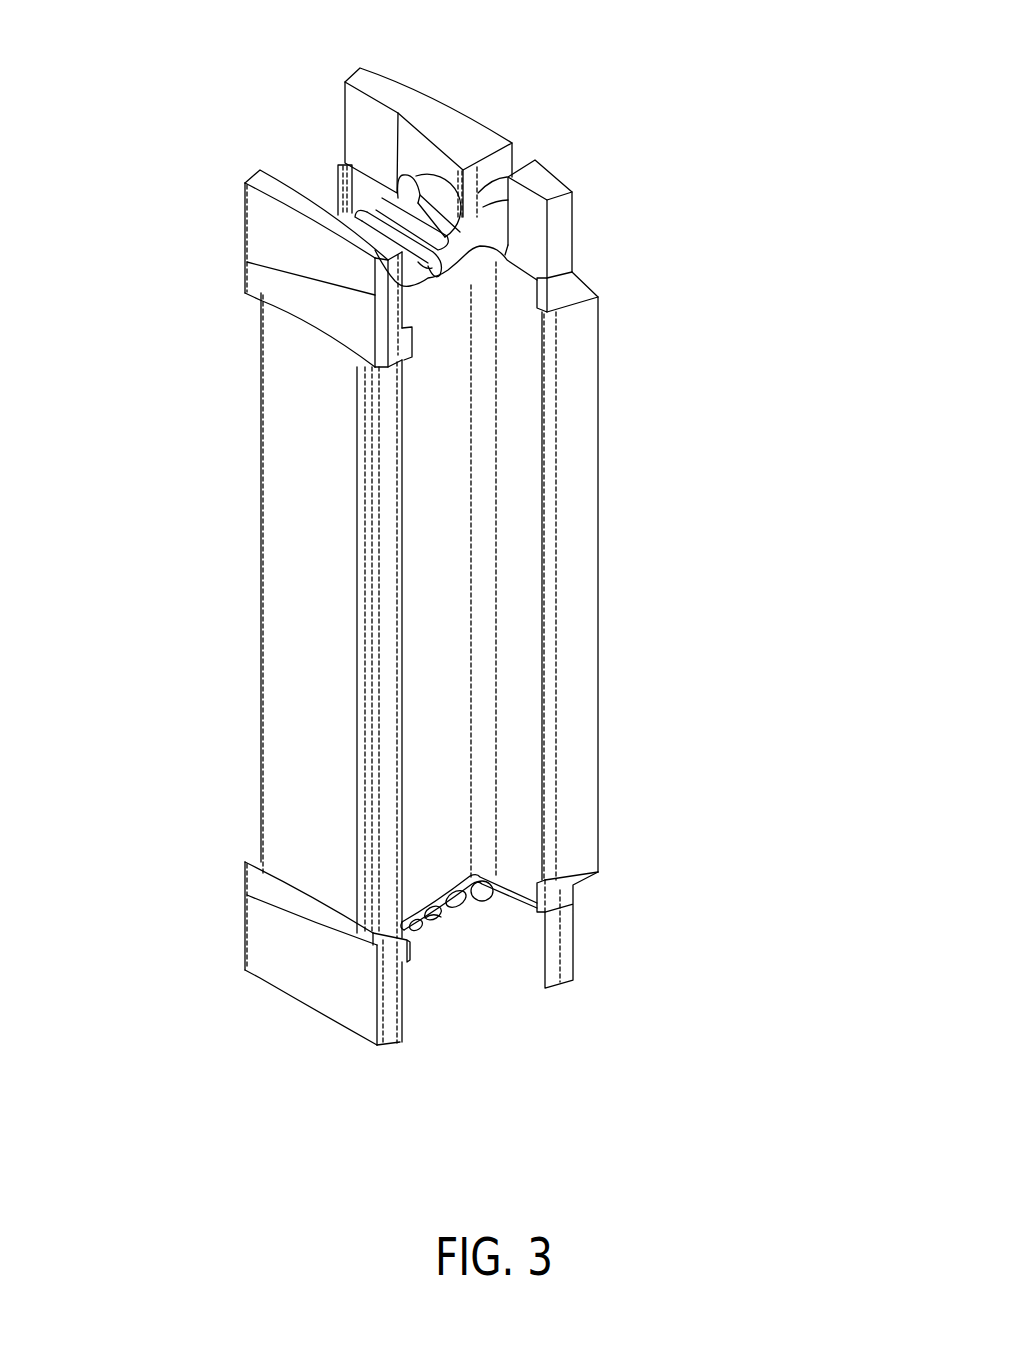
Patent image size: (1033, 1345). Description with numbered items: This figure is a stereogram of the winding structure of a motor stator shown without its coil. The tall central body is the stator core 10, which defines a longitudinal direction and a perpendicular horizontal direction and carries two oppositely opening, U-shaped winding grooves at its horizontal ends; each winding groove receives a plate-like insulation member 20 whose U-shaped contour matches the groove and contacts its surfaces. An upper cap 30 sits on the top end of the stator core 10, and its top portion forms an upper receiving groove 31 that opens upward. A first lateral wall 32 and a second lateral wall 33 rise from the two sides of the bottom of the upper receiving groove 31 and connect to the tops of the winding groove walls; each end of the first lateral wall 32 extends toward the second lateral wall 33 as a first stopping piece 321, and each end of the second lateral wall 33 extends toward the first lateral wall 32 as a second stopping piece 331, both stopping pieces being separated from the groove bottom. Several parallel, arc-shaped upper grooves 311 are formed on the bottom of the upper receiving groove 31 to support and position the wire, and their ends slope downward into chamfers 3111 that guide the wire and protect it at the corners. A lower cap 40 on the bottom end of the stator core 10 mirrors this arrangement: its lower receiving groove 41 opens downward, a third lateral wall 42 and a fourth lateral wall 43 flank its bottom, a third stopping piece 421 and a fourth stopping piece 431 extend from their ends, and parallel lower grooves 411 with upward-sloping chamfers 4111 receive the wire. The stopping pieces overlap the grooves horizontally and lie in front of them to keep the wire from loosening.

The stator core 10 is at (592, 587).
The insulation member 20 is at (530, 686).
The upper cap 30 is at (550, 143).
The upper receiving groove 31 is at (420, 187).
The upper groove 311 is at (430, 219).
The chamfer 3111 is at (427, 260).
The first lateral wall 32 is at (365, 125).
The first stopping piece 321 is at (542, 293).
The second lateral wall 33 is at (277, 230).
The second stopping piece 331 is at (412, 343).
The lower cap 40 is at (602, 997).
The lower receiving groove 41 is at (483, 893).
The lower groove 411 is at (433, 922).
The chamfer 4111 is at (433, 965).
The third lateral wall 42 is at (560, 950).
The third stopping piece 421 is at (540, 898).
The fourth lateral wall 43 is at (297, 970).
The fourth stopping piece 431 is at (407, 943).